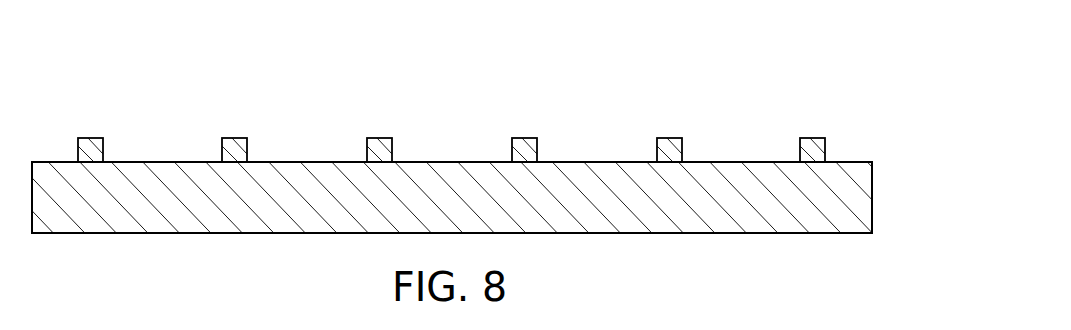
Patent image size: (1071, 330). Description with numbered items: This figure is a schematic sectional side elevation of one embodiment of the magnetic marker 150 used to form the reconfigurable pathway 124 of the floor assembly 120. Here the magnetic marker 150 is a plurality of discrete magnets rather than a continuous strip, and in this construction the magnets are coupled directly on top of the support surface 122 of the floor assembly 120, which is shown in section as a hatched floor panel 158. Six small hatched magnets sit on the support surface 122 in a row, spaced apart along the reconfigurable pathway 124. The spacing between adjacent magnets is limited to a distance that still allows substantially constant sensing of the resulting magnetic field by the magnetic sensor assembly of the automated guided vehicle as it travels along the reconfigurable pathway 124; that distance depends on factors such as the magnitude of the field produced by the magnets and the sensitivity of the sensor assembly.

The floor assembly 120 is at (474, 120).
The support surface 122 is at (317, 160).
The reconfigurable pathway 124 is at (474, 120).
The magnetic marker 150 is at (474, 120).
The floor panel 158 is at (873, 200).